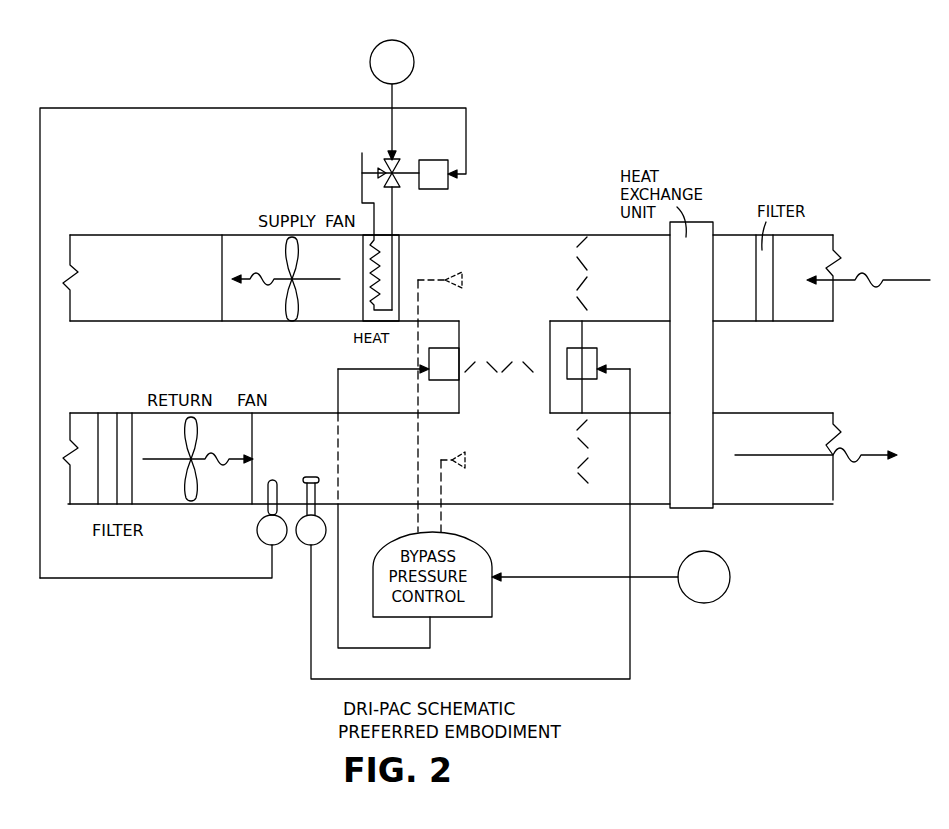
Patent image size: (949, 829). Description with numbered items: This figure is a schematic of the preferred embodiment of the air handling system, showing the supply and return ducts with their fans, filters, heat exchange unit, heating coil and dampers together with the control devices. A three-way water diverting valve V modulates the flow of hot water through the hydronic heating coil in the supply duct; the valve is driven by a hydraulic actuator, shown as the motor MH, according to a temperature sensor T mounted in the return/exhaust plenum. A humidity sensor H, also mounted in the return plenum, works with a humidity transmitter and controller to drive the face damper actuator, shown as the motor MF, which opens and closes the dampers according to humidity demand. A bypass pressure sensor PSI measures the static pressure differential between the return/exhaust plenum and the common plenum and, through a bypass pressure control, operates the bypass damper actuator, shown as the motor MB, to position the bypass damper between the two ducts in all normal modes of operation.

The 3-way water diverting valve V is at (392, 100).
The heater valve motor MH is at (433, 174).
The bypass damper motor MB is at (444, 364).
The face damper motor MF is at (582, 364).
The temperature sensor T is at (272, 512).
The humidity sensor H is at (311, 511).
The bypass pressure sensor PSI is at (704, 577).